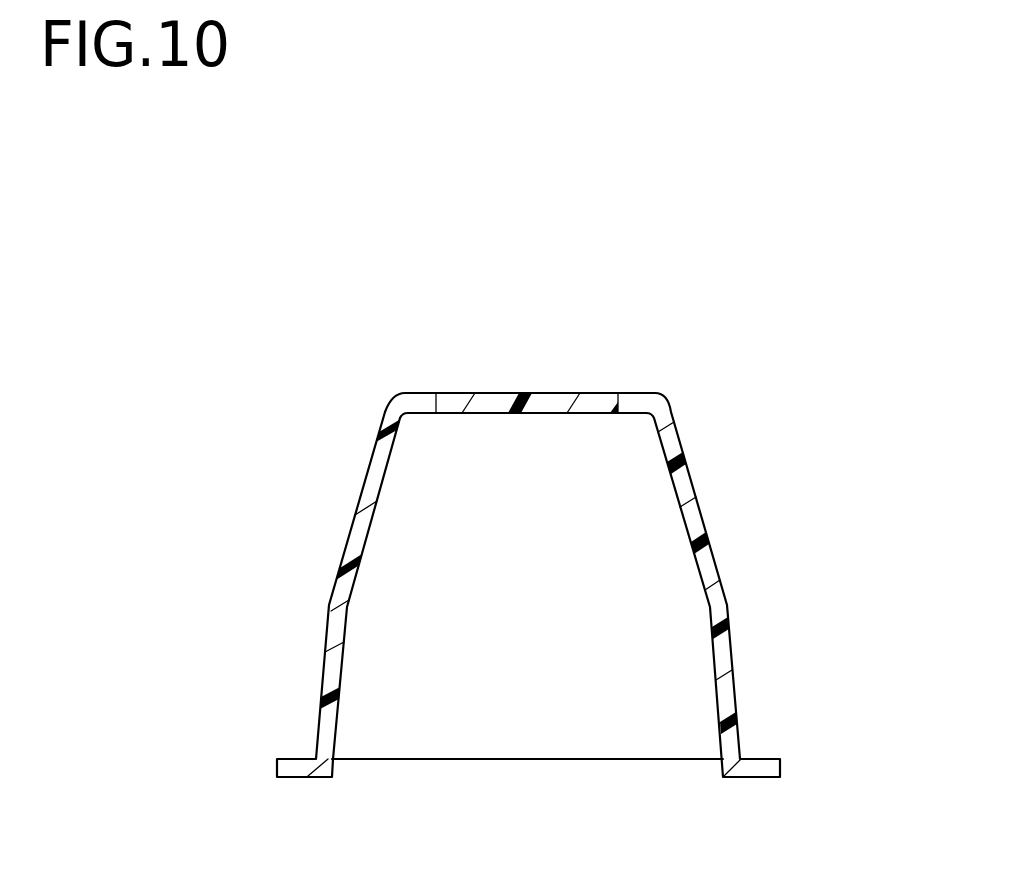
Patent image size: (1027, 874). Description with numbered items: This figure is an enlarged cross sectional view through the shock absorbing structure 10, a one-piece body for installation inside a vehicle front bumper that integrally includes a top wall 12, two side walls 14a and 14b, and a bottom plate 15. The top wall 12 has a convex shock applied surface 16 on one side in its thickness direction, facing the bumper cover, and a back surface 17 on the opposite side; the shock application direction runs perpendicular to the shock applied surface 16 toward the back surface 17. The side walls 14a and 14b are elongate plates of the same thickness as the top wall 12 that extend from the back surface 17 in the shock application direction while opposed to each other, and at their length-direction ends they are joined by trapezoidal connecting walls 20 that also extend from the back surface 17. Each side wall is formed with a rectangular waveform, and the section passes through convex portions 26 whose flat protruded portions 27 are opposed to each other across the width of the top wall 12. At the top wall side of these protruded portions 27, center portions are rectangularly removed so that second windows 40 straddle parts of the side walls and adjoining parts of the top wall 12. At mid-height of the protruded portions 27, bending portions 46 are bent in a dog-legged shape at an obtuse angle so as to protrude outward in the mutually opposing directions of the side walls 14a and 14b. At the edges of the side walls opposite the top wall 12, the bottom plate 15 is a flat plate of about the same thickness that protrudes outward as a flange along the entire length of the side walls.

The shock absorbing structure 10 is at (356, 353).
The top wall 12 is at (530, 391).
The side wall 14a is at (740, 549).
The side wall 14b is at (310, 650).
The bottom plate 15 is at (298, 766).
The shock applied surface 16 is at (495, 392).
The back surface 17 is at (482, 414).
The connecting wall 20 is at (549, 690).
The convex portion 26 is at (357, 538).
The protruded portion 27 is at (573, 504).
The second window 40 is at (386, 420).
The bending portion 46 is at (332, 603).